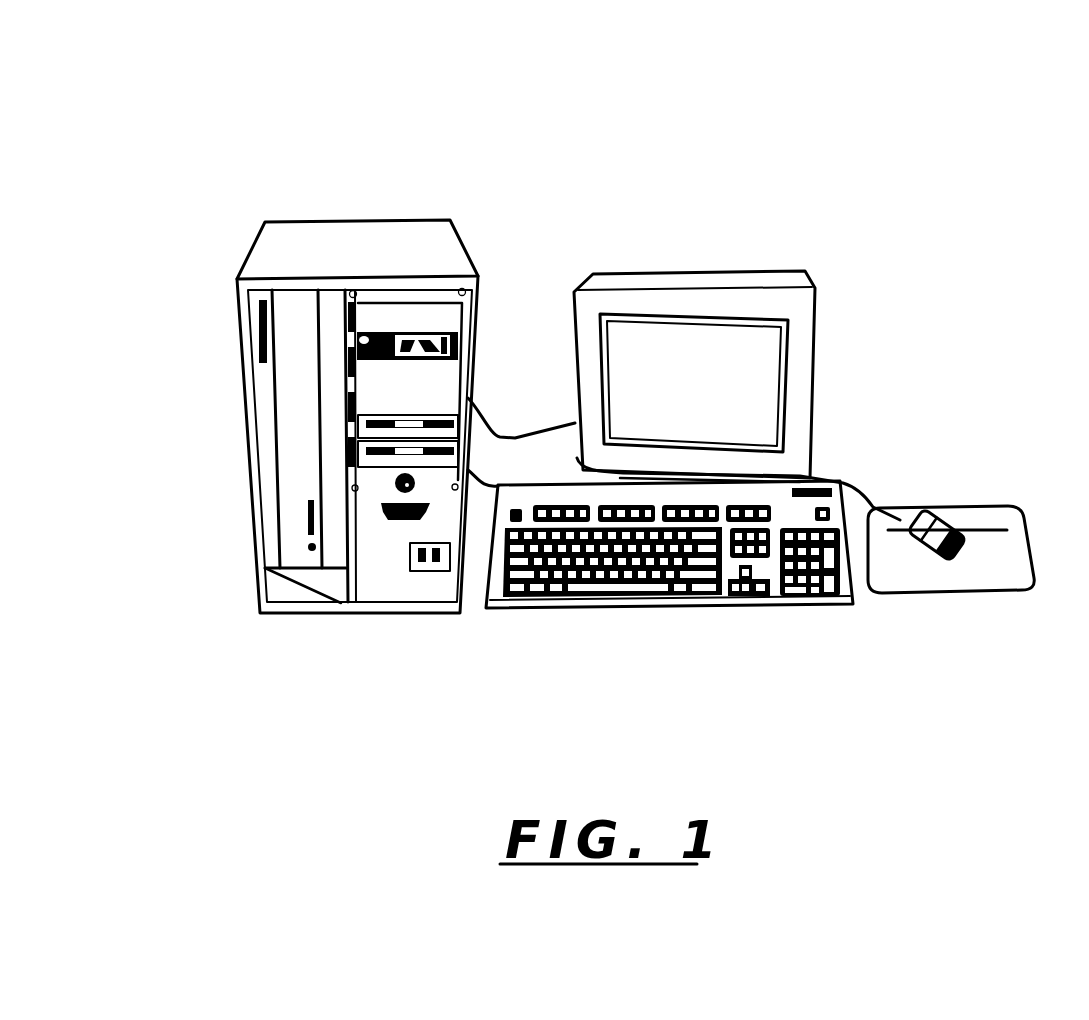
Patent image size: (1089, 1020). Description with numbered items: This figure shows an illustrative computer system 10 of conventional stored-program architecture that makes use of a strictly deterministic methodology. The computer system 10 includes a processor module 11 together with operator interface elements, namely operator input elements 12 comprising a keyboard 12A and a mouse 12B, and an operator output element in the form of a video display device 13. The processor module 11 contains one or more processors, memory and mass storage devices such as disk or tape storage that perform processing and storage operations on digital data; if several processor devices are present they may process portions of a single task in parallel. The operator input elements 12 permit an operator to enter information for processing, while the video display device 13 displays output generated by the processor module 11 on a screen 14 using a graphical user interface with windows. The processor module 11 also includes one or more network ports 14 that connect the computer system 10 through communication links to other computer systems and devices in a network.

The computer system 10 is at (162, 138).
The processor module 11 is at (367, 222).
The operator input elements 12 is at (847, 658).
The keyboard 12A is at (712, 610).
The mouse 12B is at (1014, 597).
The video display device 13 is at (824, 380).
The network ports 14 is at (245, 440).